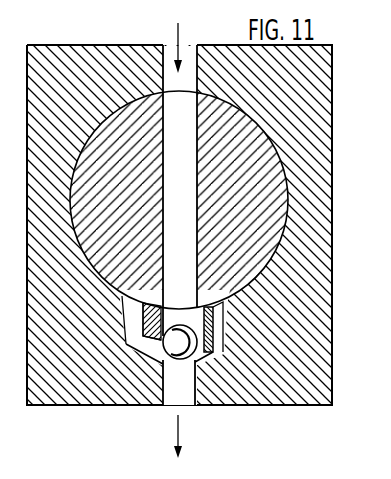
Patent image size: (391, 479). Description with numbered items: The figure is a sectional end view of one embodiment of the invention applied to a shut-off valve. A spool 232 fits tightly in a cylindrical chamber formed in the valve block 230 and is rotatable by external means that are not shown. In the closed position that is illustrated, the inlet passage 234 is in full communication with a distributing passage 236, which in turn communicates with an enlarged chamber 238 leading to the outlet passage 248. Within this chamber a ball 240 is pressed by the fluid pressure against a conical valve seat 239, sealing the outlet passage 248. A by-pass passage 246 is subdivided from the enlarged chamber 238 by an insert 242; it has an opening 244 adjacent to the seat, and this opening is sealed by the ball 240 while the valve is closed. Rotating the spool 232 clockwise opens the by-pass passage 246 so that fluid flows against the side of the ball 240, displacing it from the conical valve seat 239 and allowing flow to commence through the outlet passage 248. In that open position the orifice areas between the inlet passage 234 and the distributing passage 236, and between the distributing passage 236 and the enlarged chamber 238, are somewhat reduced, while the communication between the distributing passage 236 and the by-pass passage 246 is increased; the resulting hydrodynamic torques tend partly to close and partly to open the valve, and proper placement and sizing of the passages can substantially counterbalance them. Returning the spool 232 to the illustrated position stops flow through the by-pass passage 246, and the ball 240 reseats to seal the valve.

The valve block 230 is at (333, 128).
The spool 232 is at (252, 220).
The inlet passage 234 is at (163, 52).
The distributing passage 236 is at (193, 173).
The enlarged chamber 238 is at (217, 308).
The conical valve seat 239 is at (197, 354).
The ball 240 is at (214, 332).
The insert 242 is at (121, 304).
The opening 244 is at (134, 347).
The by-pass passage 246 is at (124, 317).
The outlet passage 248 is at (170, 405).